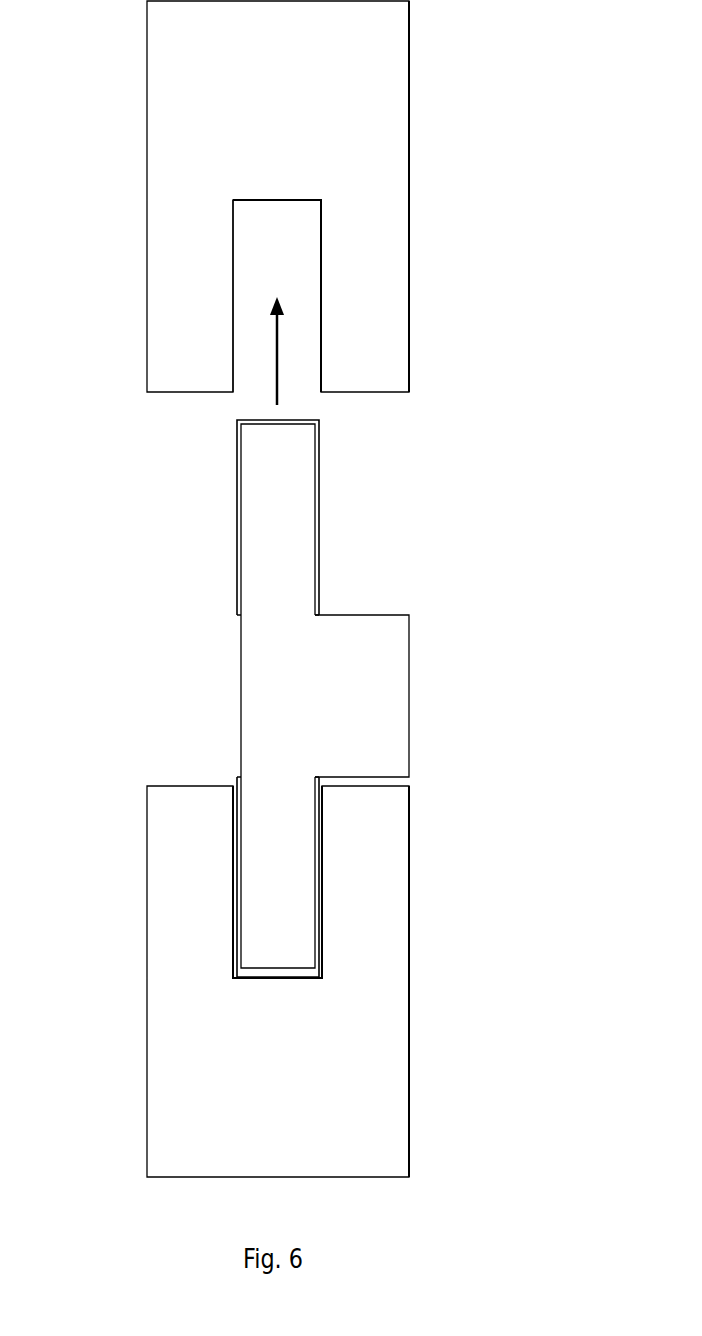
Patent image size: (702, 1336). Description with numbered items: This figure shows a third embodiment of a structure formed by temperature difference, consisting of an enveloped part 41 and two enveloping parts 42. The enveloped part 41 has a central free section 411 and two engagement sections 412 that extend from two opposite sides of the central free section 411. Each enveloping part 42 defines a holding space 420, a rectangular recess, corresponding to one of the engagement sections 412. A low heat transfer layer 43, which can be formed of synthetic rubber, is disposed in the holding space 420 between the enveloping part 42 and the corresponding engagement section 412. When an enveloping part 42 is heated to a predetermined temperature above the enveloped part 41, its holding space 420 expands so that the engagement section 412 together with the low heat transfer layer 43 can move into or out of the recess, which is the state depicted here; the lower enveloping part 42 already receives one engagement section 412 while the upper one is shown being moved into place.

The enveloped part 41 is at (411, 696).
The central free section 411 is at (385, 705).
The engagement section 412 is at (285, 578).
The enveloping part 42 is at (390, 377).
The holding space 420 is at (242, 231).
The low heat transfer layer 43 is at (236, 547).